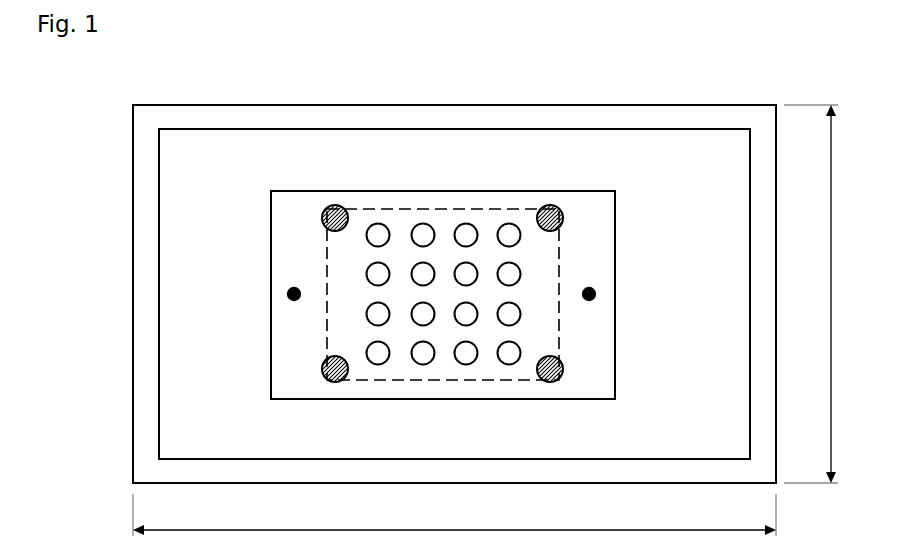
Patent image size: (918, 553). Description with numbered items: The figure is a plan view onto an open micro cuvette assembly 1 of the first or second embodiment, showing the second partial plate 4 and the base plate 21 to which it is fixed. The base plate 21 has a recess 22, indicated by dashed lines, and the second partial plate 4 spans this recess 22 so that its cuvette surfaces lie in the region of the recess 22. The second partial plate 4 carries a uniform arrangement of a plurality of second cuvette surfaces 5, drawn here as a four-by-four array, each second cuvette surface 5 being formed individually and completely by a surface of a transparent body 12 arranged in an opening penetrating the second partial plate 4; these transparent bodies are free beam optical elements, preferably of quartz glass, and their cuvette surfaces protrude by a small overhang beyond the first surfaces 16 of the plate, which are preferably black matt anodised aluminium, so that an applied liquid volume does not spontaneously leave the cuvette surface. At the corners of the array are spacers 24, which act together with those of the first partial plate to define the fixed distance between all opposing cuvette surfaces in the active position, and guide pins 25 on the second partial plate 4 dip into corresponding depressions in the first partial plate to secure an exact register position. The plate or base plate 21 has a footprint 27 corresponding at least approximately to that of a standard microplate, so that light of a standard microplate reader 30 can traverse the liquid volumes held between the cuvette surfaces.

The micro cuvette assembly 1 is at (278, 82).
The second partial plate 4 is at (292, 257).
The second cuvette surfaces 5 is at (425, 222).
The transparent body 12 is at (423, 355).
The first surfaces 16 is at (330, 331).
The base plate 21 is at (190, 283).
The recess 22 is at (478, 207).
The spacers 24 is at (332, 205).
The guide pins 25 is at (289, 300).
The footprint 27 is at (485, 320).
The standard microplate reader 30 is at (770, 51).